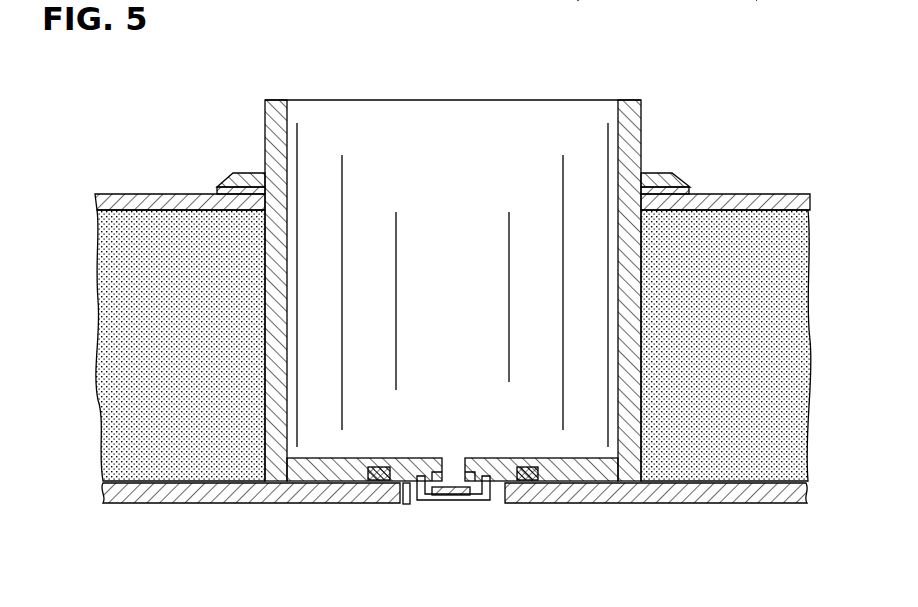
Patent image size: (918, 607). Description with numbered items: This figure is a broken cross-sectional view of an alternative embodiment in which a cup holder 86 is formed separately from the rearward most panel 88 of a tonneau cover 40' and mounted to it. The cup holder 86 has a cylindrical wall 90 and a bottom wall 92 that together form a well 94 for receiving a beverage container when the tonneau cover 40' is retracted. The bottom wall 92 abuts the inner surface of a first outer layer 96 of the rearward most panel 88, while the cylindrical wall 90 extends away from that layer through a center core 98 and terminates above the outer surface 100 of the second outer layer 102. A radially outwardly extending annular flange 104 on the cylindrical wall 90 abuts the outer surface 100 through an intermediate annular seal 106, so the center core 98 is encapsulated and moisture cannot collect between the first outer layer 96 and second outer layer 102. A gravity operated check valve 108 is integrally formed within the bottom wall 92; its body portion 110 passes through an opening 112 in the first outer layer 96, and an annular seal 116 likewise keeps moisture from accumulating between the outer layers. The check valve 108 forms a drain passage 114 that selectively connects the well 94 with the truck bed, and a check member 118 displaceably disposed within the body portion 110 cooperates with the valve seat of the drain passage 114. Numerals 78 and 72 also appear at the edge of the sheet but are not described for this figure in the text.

The tonneau cover 40' is at (461, 294).
The cup holder 86 is at (450, 142).
The cylindrical wall 90 is at (272, 289).
The well 94 is at (459, 319).
The outer surface 100 is at (185, 194).
The annular flange 104 is at (243, 173).
The annular seal 106 is at (690, 187).
The rearward most panel 88 is at (722, 190).
The second outer layer 102 is at (795, 194).
The center core 98 is at (778, 272).
The first outer layer 96 is at (218, 492).
The bottom wall 92 is at (565, 487).
The annular seal 116 is at (378, 488).
The body portion 110 is at (412, 458).
The drain passage 114 is at (453, 458).
The gravity operated check valve 108 is at (478, 455).
The check member 118 is at (452, 497).
The opening 112 is at (408, 501).
The component 78 is at (580, 0).
The component 72 is at (756, 0).